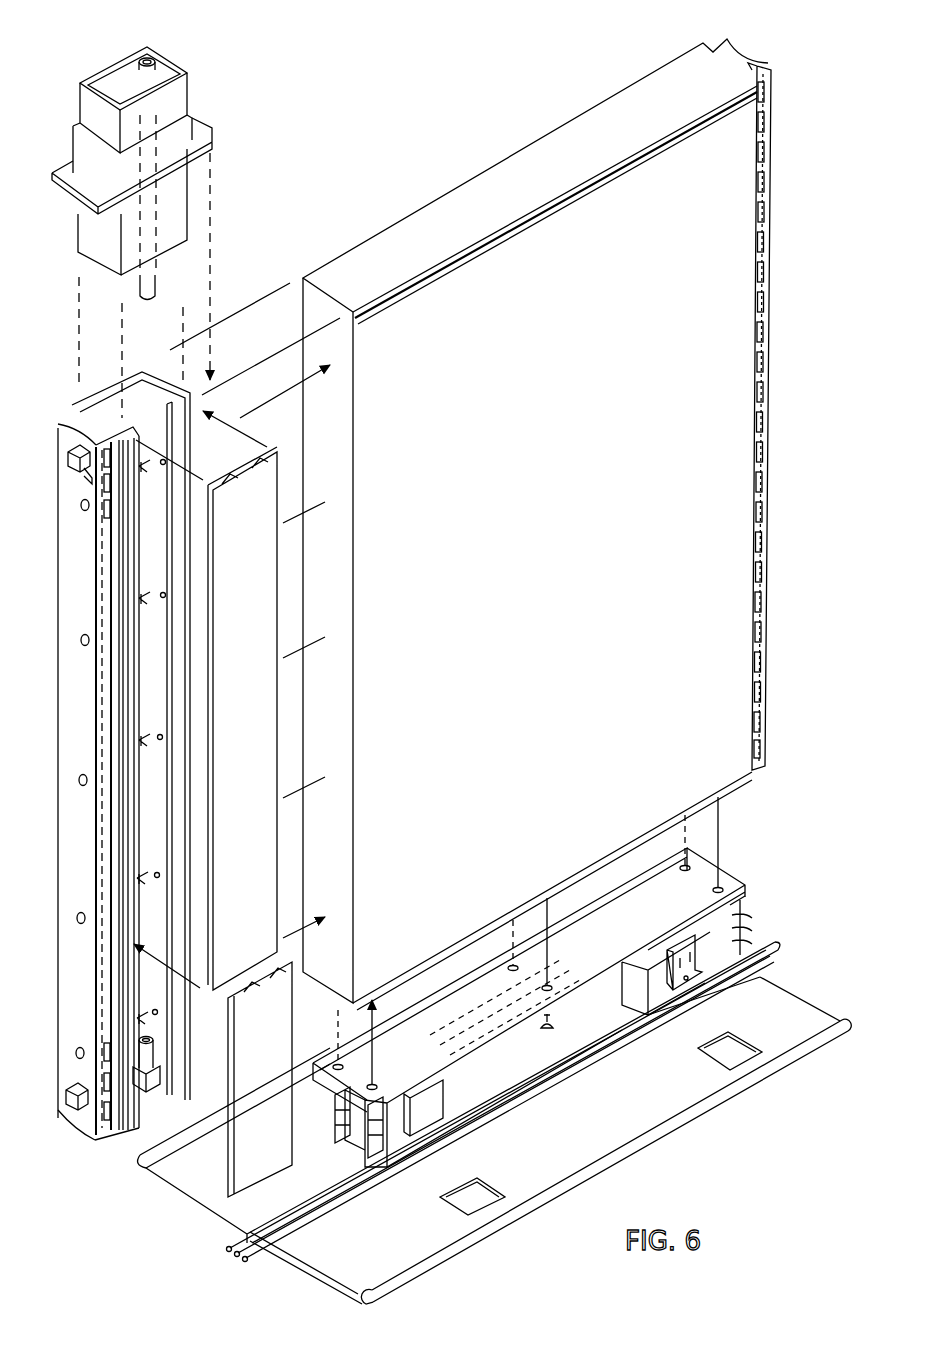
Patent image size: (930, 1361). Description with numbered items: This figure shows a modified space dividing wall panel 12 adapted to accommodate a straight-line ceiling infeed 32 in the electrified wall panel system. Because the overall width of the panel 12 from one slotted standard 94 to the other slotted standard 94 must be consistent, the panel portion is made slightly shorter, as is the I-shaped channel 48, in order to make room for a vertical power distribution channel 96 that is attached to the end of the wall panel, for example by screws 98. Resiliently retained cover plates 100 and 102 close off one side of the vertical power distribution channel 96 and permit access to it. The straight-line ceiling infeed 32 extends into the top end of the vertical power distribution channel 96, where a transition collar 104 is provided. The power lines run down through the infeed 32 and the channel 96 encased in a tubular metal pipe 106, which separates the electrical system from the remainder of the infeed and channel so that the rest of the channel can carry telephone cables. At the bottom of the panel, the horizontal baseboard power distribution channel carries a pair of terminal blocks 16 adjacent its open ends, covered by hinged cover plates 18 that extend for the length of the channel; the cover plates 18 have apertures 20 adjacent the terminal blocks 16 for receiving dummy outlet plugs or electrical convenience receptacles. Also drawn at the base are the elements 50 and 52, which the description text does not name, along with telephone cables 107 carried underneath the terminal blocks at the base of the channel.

The wall panel 12 is at (568, 426).
The terminal blocks 16 is at (718, 946).
The cover plates 18 is at (326, 1258).
The apertures 20 is at (483, 1190).
The straight-line ceiling infeed 32 is at (183, 93).
The I-shaped channel 48 is at (590, 1032).
The wires 50 is at (280, 1252).
The wire trough 52 is at (228, 1232).
The slotted standard 94 is at (62, 630).
The vertical power distribution channel 96 is at (148, 380).
The screws 98 is at (148, 470).
The cover plate 100 is at (257, 600).
The cover plate 102 is at (285, 1037).
The transition collar 104 is at (186, 136).
The tubular metal pipe 106 is at (150, 58).
The telephone cables 107 is at (227, 1254).